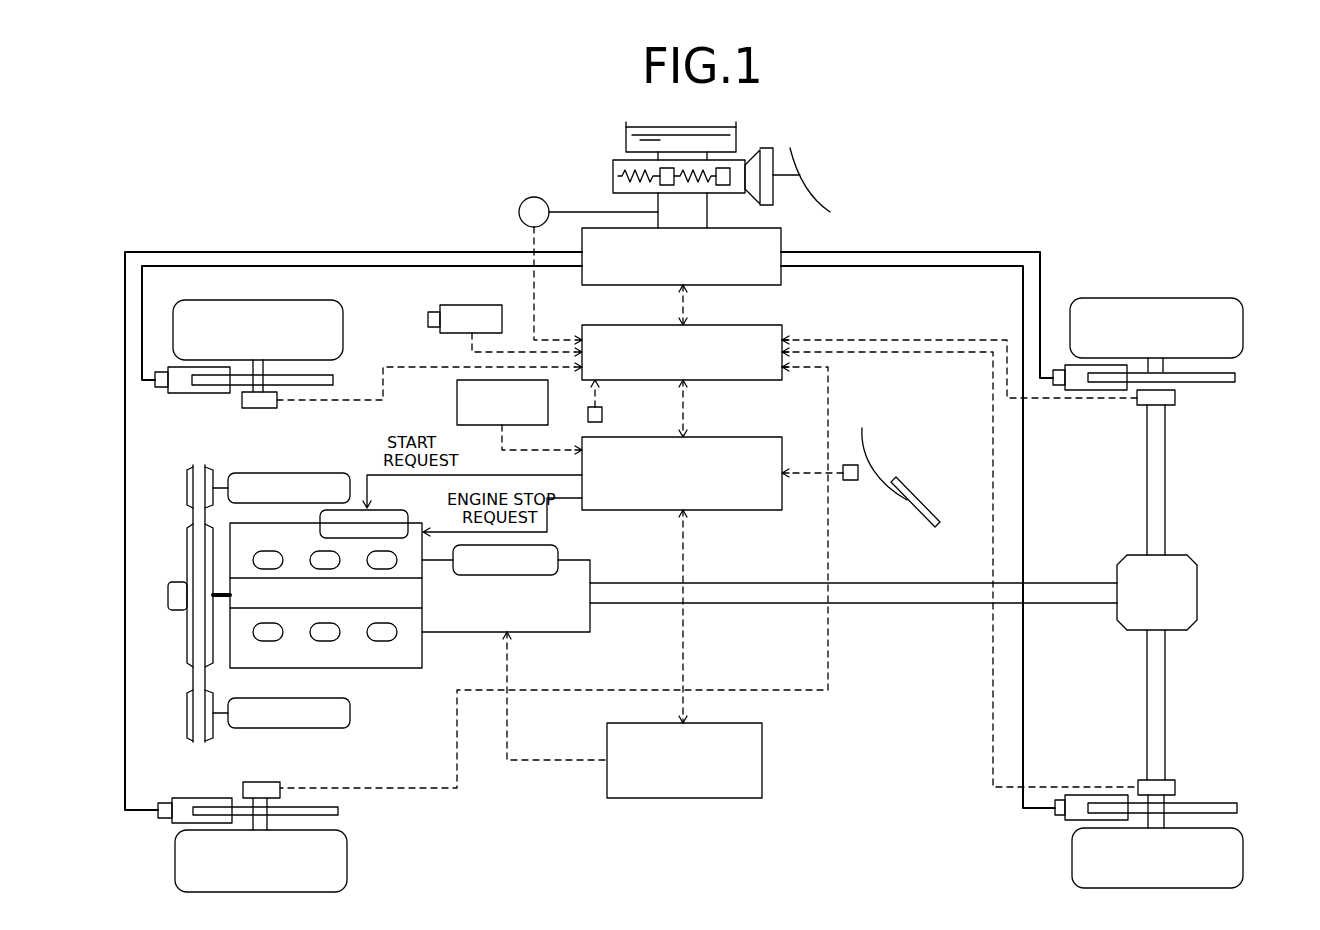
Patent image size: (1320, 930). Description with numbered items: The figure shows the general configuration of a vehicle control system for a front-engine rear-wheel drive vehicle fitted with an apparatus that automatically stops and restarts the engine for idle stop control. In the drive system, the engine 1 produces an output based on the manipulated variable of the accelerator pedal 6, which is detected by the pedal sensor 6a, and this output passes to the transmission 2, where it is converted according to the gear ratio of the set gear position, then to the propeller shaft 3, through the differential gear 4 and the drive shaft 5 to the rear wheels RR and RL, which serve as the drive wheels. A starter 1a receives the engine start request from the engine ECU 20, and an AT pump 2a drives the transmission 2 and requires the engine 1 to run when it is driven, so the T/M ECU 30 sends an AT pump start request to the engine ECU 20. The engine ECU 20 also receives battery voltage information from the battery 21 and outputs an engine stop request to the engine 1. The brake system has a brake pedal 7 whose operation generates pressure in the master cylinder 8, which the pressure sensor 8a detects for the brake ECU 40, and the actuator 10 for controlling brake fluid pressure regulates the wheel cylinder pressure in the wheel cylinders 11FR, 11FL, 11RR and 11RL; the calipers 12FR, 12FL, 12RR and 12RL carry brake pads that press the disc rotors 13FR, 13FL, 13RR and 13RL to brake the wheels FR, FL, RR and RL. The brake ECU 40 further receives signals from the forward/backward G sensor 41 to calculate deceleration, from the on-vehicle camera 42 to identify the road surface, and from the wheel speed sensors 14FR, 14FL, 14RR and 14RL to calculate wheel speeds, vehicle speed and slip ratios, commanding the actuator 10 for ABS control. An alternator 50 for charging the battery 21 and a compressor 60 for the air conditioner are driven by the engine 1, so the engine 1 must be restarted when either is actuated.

The engine 1 is at (380, 668).
The starter 1a is at (375, 510).
The transmission 2 is at (570, 632).
The AT pump 2a is at (555, 548).
The propeller shaft 3 is at (890, 605).
The differential gear 4 is at (1197, 587).
The drive shaft 5 is at (1167, 513).
The accelerator pedal 6 is at (918, 482).
The pedal sensor 6a is at (852, 480).
The brake pedal 7 is at (826, 200).
The master cylinder 8 is at (613, 170).
The pressure sensor 8a is at (519, 212).
The actuator for controlling brake fluid pressure 10 is at (781, 275).
The engine ECU 20 is at (737, 437).
The battery 21 is at (457, 410).
The T/M ECU 30 is at (762, 763).
The brake ECU 40 is at (737, 325).
The forward/backward G sensor 41 is at (602, 413).
The on-vehicle camera 42 is at (465, 305).
The alternator 50 is at (295, 473).
The compressor 60 is at (350, 713).
The wheel cylinder 11FR is at (160, 387).
The caliper 12FR is at (168, 375).
The disc rotor 13FR is at (333, 380).
The wheel speed sensor 14FR is at (258, 408).
The wheel cylinder 11FL is at (163, 803).
The caliper 12FL is at (180, 823).
The disc rotor 13FL is at (338, 810).
The wheel speed sensor 14FL is at (258, 782).
The wheel cylinder 11RR is at (1057, 385).
The caliper 12RR is at (1110, 390).
The disc rotor 13RR is at (1235, 378).
The wheel speed sensor 14RR is at (1175, 400).
The wheel cylinder 11RL is at (1057, 800).
The caliper 12RL is at (1108, 795).
The disc rotor 13RL is at (1237, 808).
The wheel speed sensor 14RL is at (1175, 790).
The front-right wheel FR is at (300, 300).
The front-left wheel FL is at (347, 860).
The rear-right wheel RR is at (1205, 298).
The rear-left wheel RL is at (1243, 858).